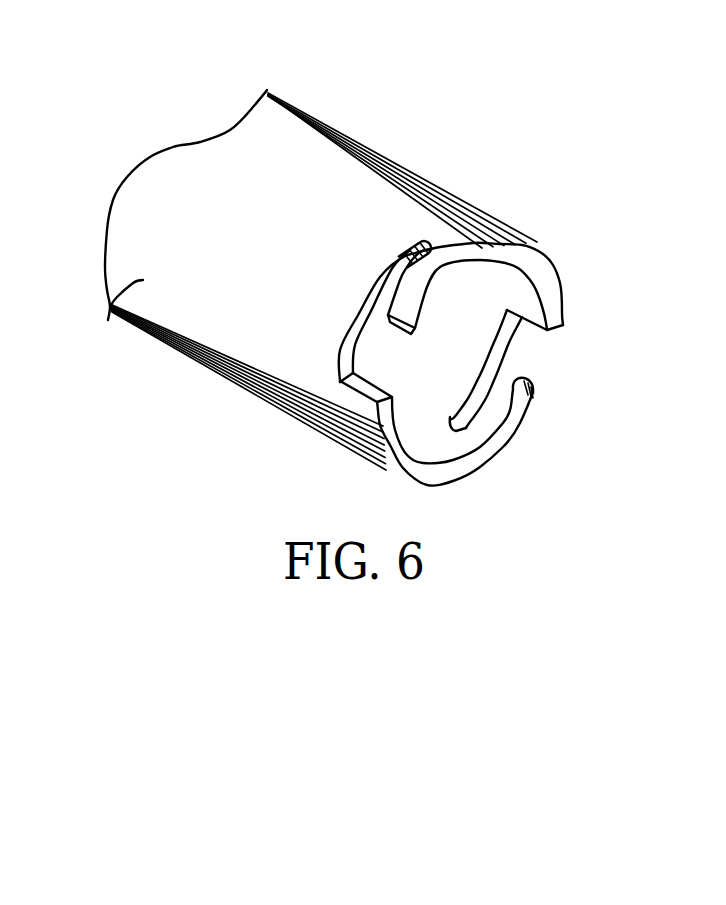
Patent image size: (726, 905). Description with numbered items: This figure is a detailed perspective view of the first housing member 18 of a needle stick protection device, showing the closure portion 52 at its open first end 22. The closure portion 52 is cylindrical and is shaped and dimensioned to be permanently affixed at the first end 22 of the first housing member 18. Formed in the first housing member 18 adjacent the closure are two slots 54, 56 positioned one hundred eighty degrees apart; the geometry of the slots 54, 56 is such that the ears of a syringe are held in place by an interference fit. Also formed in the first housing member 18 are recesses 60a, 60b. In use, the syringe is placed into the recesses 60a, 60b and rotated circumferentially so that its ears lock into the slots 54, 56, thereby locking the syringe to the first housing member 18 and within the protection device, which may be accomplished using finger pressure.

The first housing member 18 is at (108, 320).
The open first end 22 is at (535, 257).
The closure portion 52 is at (346, 392).
The slot 54 is at (402, 275).
The slot 56 is at (483, 405).
The recess 60a is at (373, 348).
The recess 60b is at (523, 352).